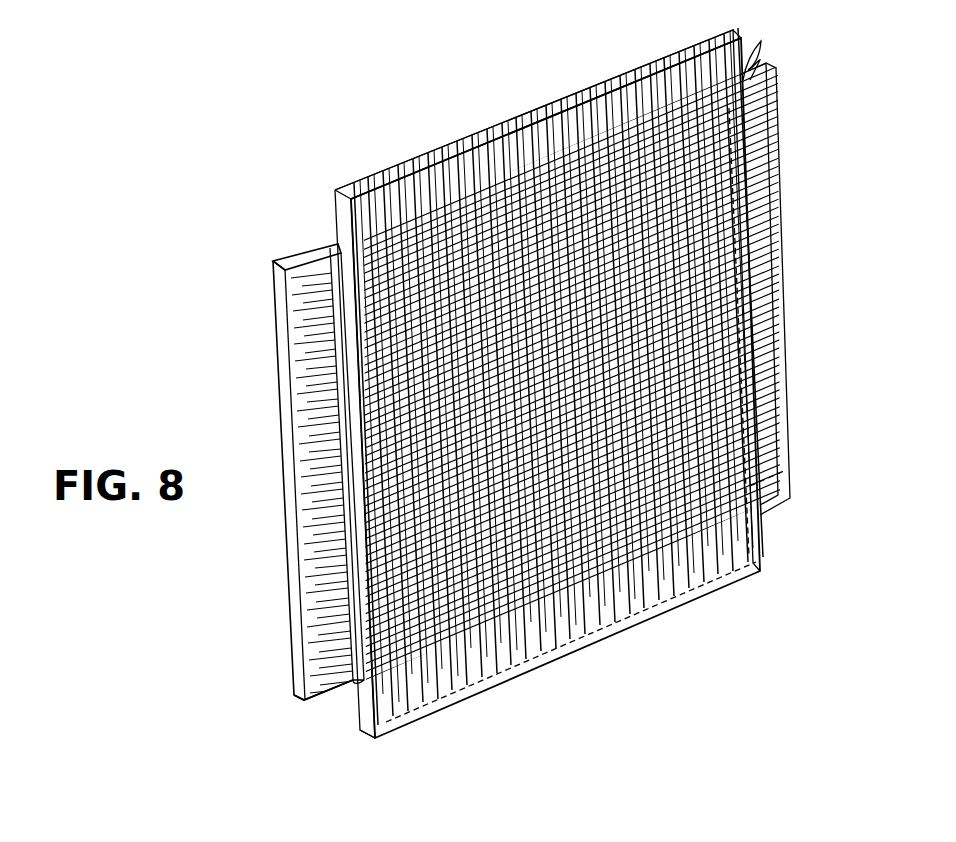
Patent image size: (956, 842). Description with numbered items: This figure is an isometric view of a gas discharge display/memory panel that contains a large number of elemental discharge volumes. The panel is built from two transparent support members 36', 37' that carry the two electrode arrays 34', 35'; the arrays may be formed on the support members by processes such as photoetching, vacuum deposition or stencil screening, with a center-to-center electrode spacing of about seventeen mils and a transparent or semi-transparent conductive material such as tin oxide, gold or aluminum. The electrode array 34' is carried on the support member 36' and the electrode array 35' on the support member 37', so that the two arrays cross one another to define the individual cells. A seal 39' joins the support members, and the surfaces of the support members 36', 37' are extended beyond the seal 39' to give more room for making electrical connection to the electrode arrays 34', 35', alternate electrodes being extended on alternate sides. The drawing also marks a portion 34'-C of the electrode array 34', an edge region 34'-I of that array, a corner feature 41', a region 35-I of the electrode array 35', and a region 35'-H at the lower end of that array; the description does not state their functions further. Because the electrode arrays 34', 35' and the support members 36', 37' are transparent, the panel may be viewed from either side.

The electrode array 34' is at (547, 384).
The channels of panel 34'-C is at (616, 376).
The side flange of panel 34'-I is at (329, 477).
The support member 37' is at (538, 114).
The corner tab 41' is at (787, 57).
The electrode array 35' is at (247, 483).
The support member 36' is at (277, 480).
The top of side member 35-I is at (297, 250).
The seal 39' is at (315, 431).
The bottom of side member 35'-H is at (278, 703).